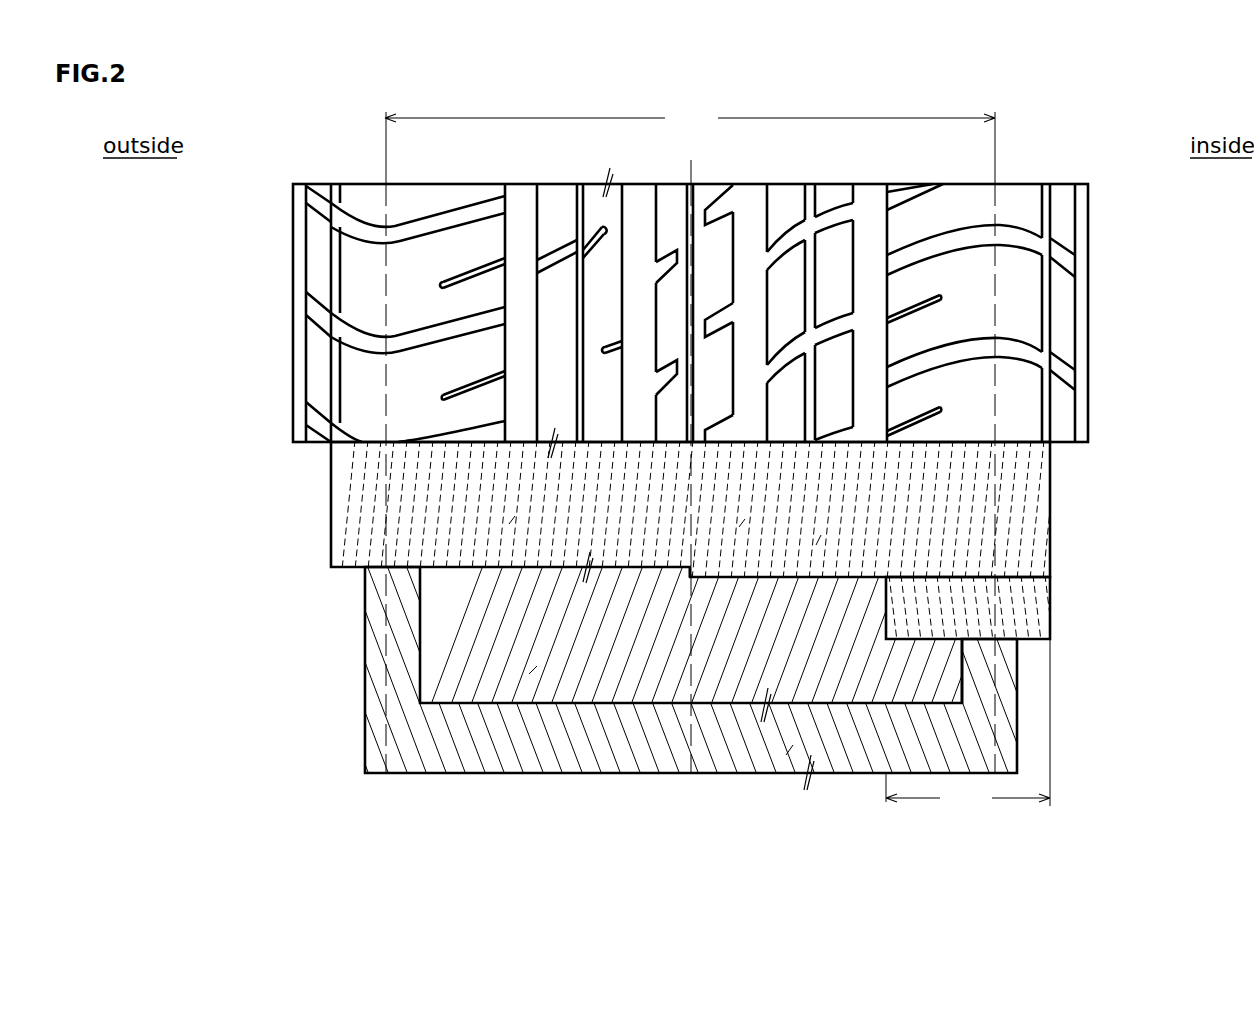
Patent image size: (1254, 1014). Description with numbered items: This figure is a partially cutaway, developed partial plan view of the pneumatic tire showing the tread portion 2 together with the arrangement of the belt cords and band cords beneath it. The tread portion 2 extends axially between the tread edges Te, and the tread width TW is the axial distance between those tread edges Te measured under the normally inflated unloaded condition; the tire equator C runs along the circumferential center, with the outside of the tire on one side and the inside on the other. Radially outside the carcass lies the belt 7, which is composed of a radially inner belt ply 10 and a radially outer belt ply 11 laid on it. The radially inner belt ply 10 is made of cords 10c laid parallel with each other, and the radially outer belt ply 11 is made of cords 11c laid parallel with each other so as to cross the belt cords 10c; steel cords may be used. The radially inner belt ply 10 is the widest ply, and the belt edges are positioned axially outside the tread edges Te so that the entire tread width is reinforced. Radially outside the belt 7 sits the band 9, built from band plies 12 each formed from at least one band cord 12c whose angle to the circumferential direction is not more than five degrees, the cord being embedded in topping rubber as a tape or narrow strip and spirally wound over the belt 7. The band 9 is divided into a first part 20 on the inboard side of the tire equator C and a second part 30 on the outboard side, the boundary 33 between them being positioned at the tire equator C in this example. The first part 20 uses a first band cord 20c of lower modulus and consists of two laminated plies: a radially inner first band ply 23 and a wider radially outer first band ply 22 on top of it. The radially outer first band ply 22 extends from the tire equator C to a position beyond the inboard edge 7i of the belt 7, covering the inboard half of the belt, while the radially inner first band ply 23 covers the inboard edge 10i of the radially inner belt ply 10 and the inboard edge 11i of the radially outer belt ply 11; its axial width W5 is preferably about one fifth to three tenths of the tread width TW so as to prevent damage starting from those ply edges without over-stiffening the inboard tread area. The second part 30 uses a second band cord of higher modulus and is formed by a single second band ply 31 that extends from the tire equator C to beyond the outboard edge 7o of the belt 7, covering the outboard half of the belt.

The tread portion 2 is at (774, 169).
The belt 7 is at (610, 858).
The outboard edge of the belt 7o is at (366, 655).
The inboard edge of the belt 7i is at (1052, 670).
The band 9 is at (944, 518).
The radially inner belt ply 10 is at (541, 750).
The belt cords of the radially inner belt ply 10c is at (790, 750).
The inboard edge of the radially inner belt ply 10i is at (1017, 712).
The radially outer belt ply 11 is at (597, 687).
The belt cords of the radially outer belt ply 11c is at (533, 670).
The inboard edge of the radially outer belt ply 11i is at (963, 678).
The band ply 12 is at (700, 649).
The band cord 12c is at (513, 520).
The first part of the band 20 is at (900, 858).
The first band cord 20c is at (742, 523).
The radially outer first band ply 22 is at (824, 552).
The radially inner first band ply 23 is at (912, 599).
The second part of the band 30 is at (378, 703).
The second band ply 31 is at (475, 549).
The boundary between the first part and the second part 33 is at (688, 527).
The tread edge Te is at (386, 299).
The tread width TW is at (690, 119).
The tire equator C is at (691, 453).
The axial width of the radially inner first band ply W5 is at (968, 725).